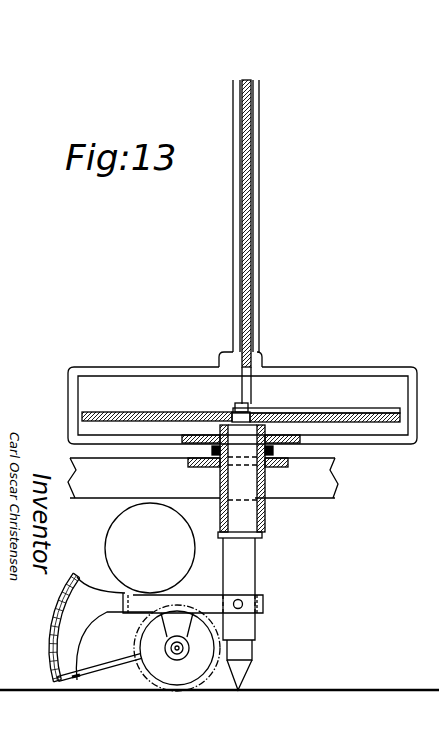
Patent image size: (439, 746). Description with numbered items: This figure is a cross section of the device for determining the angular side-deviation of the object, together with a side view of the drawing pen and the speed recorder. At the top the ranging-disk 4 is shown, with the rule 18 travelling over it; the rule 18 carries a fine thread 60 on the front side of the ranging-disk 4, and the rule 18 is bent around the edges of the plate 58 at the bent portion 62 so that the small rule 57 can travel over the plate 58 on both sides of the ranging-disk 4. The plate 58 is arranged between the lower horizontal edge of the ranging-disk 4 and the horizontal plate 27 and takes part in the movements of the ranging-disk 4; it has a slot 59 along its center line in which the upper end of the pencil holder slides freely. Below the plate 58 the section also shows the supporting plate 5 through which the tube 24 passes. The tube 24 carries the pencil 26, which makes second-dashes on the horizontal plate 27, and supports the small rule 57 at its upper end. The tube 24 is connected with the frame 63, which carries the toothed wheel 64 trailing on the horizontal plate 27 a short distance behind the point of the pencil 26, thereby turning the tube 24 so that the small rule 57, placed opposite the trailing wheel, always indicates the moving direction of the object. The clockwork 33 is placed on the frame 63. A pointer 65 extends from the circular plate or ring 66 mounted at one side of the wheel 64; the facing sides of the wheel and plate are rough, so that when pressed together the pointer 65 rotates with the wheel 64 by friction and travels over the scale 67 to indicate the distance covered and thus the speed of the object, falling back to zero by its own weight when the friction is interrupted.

The ranging-disk 4 is at (249, 229).
The rule 18 is at (233, 253).
The thread 60 is at (256, 281).
The bent portion of rule 62 is at (88, 367).
The plate 58 is at (108, 412).
The small rule 57 is at (297, 409).
The slot 59 is at (234, 406).
The supporting plate 5 is at (322, 492).
The clockwork 33 is at (105, 534).
The tube 24 is at (255, 560).
The pencil 26 is at (247, 673).
The frame 63 is at (187, 598).
The pointer 65 is at (95, 668).
The scale 67 is at (50, 632).
The circular plate or ring 66 is at (151, 663).
The toothed wheel 64 is at (200, 686).
The horizontal plate 27 is at (308, 691).